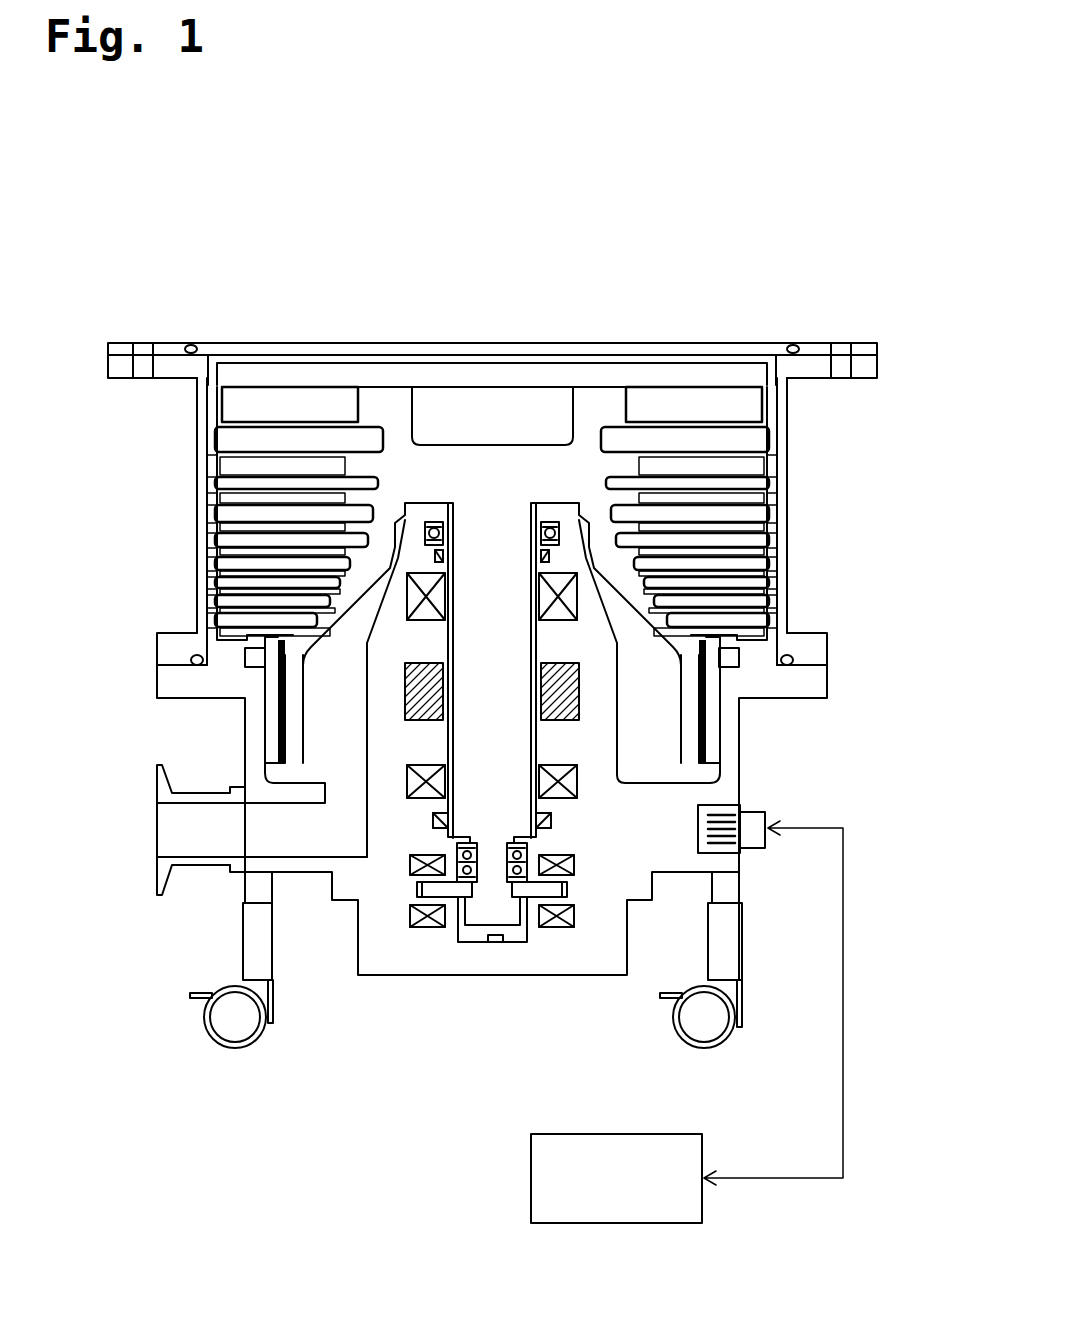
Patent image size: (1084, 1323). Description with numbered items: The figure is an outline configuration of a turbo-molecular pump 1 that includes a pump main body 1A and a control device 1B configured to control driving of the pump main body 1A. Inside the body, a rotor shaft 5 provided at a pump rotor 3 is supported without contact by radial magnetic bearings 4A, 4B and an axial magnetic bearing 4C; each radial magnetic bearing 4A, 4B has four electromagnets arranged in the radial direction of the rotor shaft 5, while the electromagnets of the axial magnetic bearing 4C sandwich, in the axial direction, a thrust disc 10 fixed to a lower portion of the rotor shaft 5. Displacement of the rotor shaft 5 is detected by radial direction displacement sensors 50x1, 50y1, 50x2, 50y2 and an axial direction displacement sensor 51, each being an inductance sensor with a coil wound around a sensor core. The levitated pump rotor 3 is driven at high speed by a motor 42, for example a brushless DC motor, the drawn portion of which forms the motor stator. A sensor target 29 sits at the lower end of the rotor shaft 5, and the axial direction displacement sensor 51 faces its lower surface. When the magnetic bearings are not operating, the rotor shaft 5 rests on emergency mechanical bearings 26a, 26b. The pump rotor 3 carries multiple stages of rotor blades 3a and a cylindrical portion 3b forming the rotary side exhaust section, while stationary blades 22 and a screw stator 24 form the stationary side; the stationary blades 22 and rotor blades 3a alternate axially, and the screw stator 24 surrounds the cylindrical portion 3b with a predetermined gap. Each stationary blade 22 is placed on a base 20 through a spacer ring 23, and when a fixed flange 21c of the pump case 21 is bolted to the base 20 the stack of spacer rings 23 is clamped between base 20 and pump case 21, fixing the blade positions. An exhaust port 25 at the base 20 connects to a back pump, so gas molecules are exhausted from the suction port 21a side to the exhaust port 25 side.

The turbo-molecular pump 1 is at (508, 222).
The pump main body 1A is at (803, 343).
The control device 1B is at (531, 1180).
The pump rotor 3 is at (466, 462).
The rotor blades 3a is at (232, 463).
The cylindrical portion 3b is at (290, 745).
The radial magnetic bearing 4A is at (573, 597).
The radial magnetic bearing 4B is at (578, 782).
The axial magnetic bearing 4C is at (567, 918).
The rotor shaft 5 is at (513, 750).
The thrust disc 10 is at (417, 890).
The base 20 is at (373, 977).
The pump case 21 is at (195, 578).
The suction port 21a is at (252, 343).
The fixed flange 21c is at (165, 652).
The stationary blades 22 is at (235, 437).
The spacer ring 23 is at (205, 503).
The screw stator 24 is at (275, 720).
The exhaust port 25 is at (213, 838).
The emergency mechanical bearing 26a is at (548, 532).
The emergency mechanical bearing 26b is at (465, 878).
The sensor target 29 is at (513, 918).
The motor 42 is at (585, 690).
The axial direction displacement sensor 51 is at (495, 942).
The radial direction displacement sensor 50x1 is at (548, 556).
The radial direction displacement sensor 50y1 is at (492, 556).
The radial direction displacement sensor 50x2 is at (552, 820).
The radial direction displacement sensor 50y2 is at (492, 820).